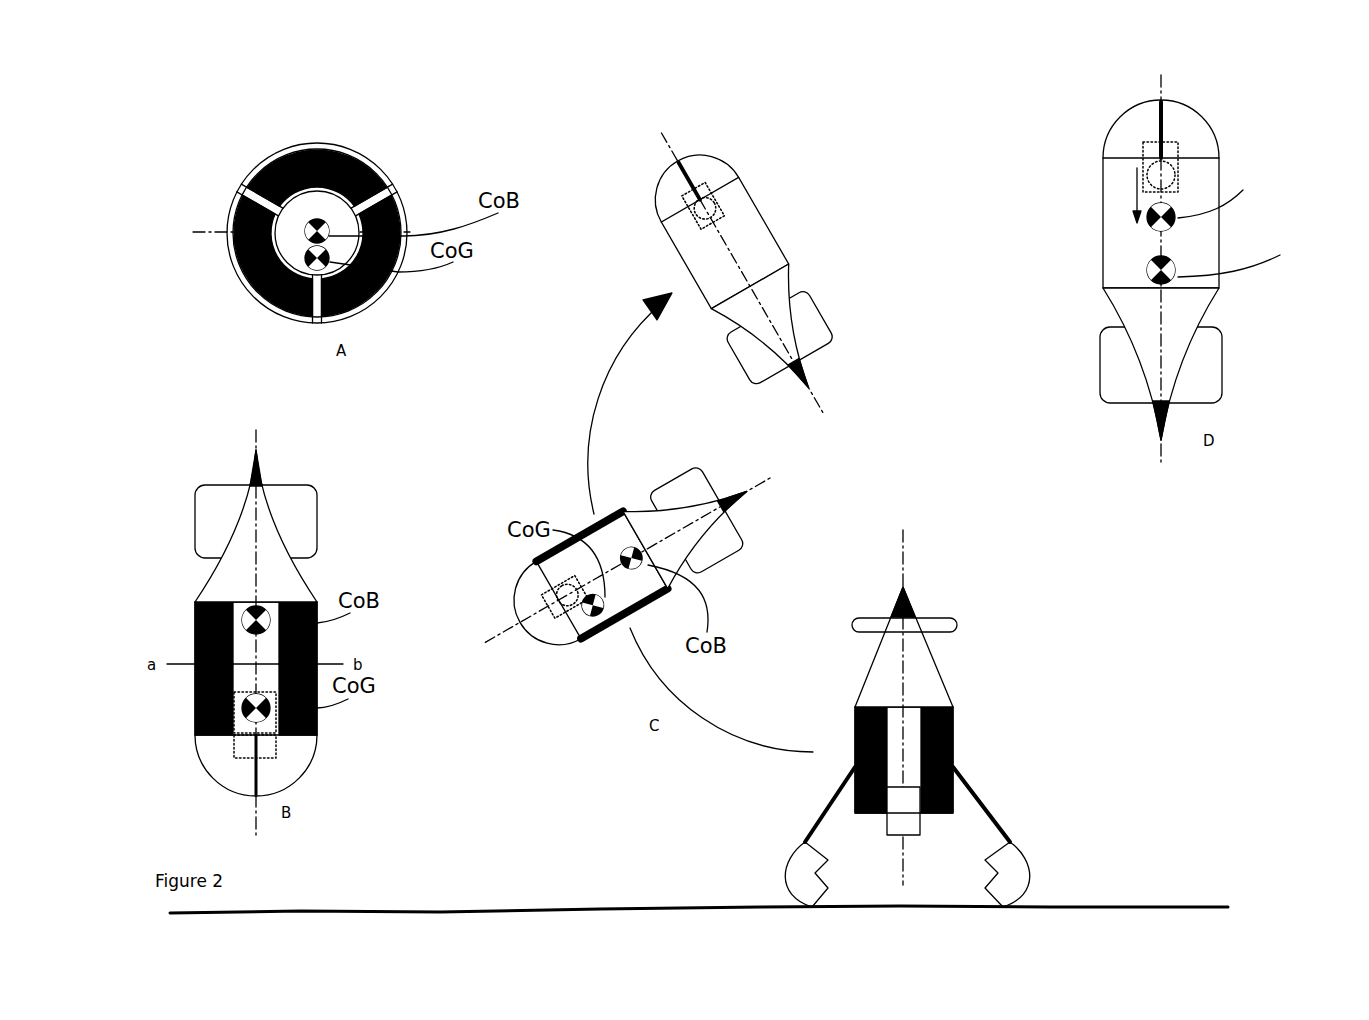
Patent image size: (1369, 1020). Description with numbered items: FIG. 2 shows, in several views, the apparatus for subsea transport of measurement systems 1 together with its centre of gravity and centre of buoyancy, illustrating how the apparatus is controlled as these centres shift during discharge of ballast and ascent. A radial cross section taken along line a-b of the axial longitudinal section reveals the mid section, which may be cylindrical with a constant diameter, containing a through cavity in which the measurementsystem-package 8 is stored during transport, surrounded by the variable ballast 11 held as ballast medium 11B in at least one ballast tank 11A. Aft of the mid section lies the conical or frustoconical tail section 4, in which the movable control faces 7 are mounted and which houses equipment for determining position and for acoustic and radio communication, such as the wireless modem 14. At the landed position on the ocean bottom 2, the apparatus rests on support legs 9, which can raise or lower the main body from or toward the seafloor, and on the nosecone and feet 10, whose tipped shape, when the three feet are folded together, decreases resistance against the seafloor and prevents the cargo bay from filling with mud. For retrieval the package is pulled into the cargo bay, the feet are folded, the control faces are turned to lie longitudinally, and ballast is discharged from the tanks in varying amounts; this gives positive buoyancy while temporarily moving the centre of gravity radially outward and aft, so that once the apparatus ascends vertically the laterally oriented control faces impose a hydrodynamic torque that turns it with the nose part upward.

The apparatus for subsea transport of measurement systems 1 is at (1101, 353).
The ocean bottom 2 is at (1167, 905).
The conical or frustoconical tail section 4 is at (303, 578).
The control face 7 is at (1217, 393).
The measurementsystem-package 8 is at (887, 824).
The support legs 9 is at (987, 808).
The nosecone and feet 10 is at (1021, 868).
The variable ballast 11 is at (245, 185).
The ballast tank 11A is at (310, 152).
The ballast medium 11B is at (322, 165).
The wireless modem on the apparatus 14 is at (907, 597).